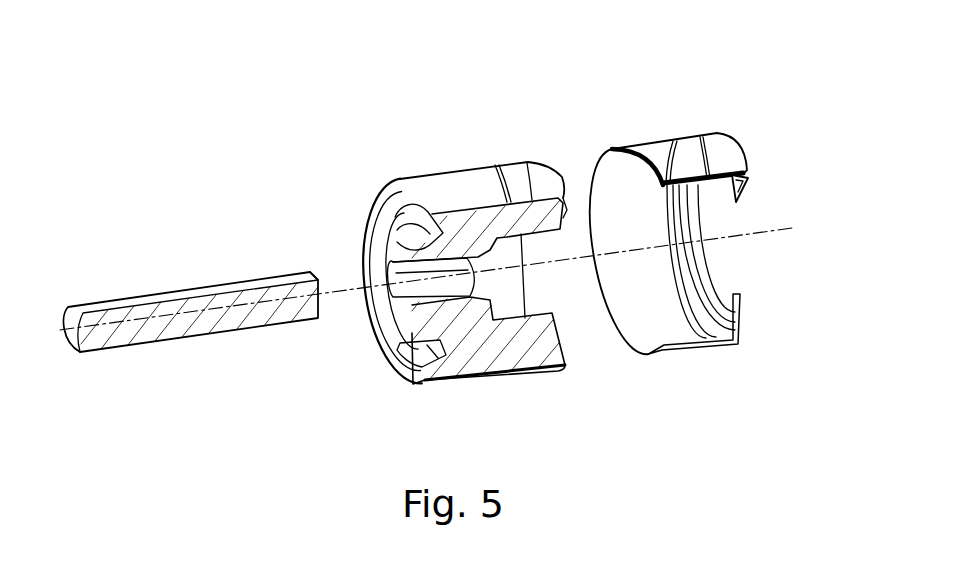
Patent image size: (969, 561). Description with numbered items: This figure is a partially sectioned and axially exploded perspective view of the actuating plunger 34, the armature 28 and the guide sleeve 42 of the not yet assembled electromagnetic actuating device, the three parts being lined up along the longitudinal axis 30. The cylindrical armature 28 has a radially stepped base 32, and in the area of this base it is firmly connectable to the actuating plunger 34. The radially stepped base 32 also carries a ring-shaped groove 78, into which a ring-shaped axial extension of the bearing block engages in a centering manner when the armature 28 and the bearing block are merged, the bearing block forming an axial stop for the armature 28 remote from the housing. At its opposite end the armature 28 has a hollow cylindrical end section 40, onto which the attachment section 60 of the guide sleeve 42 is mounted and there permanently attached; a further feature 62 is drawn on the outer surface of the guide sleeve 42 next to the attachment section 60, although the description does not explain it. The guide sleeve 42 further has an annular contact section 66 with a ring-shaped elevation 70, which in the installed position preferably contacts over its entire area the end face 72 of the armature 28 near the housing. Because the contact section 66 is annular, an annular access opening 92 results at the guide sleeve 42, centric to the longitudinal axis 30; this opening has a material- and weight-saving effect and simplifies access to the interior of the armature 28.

The armature 28 is at (450, 170).
The longitudinal axis 30 is at (792, 228).
The radially stepped base 32 is at (457, 367).
The actuating plunger 34 is at (253, 318).
The hollow cylindrical end section 40 is at (551, 358).
The guide sleeve 42 is at (692, 348).
The attachment section 60 is at (657, 150).
The groove 62 is at (697, 143).
The annular contact section 66 is at (743, 322).
The ring-shaped elevation 70 is at (753, 187).
The end face 72 is at (567, 216).
The ring-shaped groove 78 is at (418, 352).
The annular access opening 92 is at (725, 285).